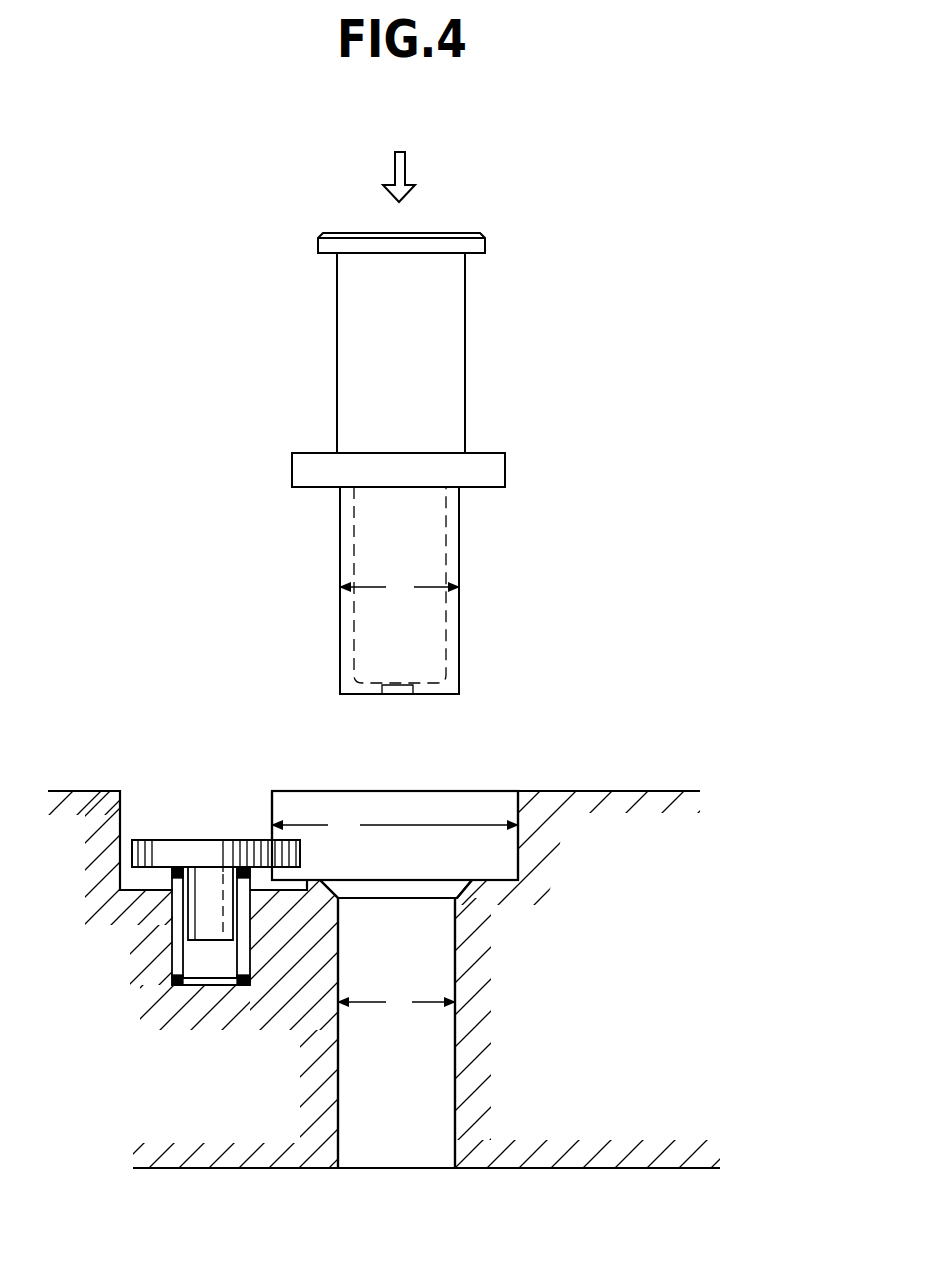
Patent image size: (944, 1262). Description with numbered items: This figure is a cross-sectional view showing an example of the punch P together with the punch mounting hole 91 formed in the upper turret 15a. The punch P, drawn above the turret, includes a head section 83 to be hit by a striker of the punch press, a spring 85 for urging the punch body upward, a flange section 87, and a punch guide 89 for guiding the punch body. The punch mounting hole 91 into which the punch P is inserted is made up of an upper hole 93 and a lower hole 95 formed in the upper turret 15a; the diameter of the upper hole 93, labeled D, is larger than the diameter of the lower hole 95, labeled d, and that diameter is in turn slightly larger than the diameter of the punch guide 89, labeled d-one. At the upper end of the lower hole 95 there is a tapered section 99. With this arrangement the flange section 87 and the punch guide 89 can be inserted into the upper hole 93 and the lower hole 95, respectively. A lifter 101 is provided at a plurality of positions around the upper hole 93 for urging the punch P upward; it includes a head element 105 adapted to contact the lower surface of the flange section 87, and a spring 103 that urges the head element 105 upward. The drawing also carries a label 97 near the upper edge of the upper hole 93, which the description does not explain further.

The punch P is at (490, 413).
The head section 83 is at (463, 233).
The spring 85 is at (465, 328).
The flange section 87 is at (498, 470).
The punch guide 89 is at (459, 558).
The punch mounting hole 91 is at (546, 910).
The upper hole 93 is at (408, 810).
The lower hole 95 is at (440, 1021).
The die upper edge 97 is at (504, 788).
The tapered section 99 is at (467, 887).
The lifter 101 is at (252, 830).
The spring 103 is at (243, 985).
The head element 105 is at (203, 853).
The upper turret 15a is at (641, 788).